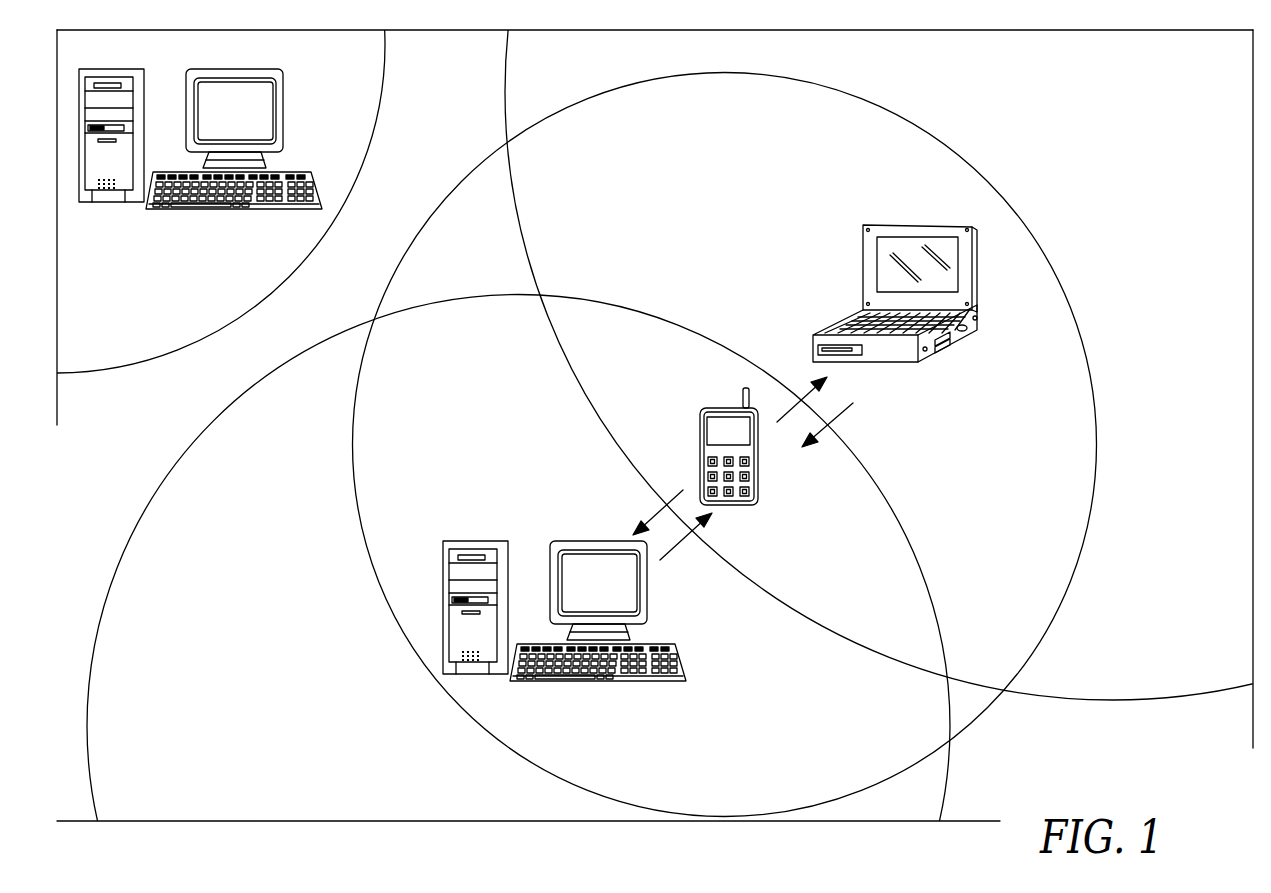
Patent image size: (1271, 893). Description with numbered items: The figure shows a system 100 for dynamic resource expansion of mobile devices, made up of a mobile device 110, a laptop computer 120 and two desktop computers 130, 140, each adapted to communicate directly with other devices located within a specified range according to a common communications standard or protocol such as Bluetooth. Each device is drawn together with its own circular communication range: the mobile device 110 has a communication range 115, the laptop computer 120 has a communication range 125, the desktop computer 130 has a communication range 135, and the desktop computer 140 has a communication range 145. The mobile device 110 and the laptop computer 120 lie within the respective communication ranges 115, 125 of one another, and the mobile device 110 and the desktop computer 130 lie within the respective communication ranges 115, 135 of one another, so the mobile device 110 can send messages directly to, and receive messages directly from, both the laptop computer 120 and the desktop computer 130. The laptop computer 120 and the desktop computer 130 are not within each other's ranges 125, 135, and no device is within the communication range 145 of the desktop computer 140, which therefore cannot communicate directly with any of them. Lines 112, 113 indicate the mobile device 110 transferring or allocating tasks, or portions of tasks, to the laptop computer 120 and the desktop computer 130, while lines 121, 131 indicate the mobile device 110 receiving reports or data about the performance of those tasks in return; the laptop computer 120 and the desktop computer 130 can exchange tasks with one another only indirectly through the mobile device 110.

The system 100 is at (478, 163).
The mobile device 110 is at (715, 407).
The line 112 is at (801, 420).
The line 113 is at (675, 497).
The communication range 115 is at (863, 98).
The laptop computer 120 is at (863, 259).
The line 121 is at (843, 413).
The communication range 125 is at (519, 213).
The desktop computer 130 is at (588, 540).
The line 131 is at (670, 553).
The communication range 135 is at (654, 315).
The desktop computer 140 is at (235, 67).
The communication range 145 is at (268, 298).